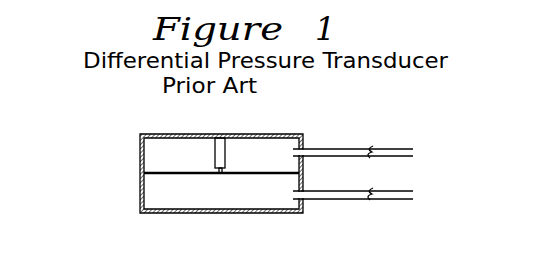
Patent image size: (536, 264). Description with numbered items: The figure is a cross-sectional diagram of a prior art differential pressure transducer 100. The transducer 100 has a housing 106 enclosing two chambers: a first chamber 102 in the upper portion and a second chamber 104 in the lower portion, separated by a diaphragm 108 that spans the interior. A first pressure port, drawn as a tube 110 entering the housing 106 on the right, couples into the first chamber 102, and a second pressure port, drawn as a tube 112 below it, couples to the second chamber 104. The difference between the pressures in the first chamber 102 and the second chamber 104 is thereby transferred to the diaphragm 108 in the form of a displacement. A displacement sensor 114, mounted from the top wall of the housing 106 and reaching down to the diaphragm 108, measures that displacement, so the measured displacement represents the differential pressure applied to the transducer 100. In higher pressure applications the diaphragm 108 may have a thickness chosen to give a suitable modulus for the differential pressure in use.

The differential pressure transducer 100 is at (82, 129).
The first chamber 102 is at (153, 155).
The second chamber 104 is at (153, 193).
The housing 106 is at (140, 213).
The diaphragm 108 is at (180, 175).
The first pressure inlet tube 110 is at (375, 153).
The second pressure inlet tube 112 is at (375, 196).
The displacement sensor 114 is at (217, 155).